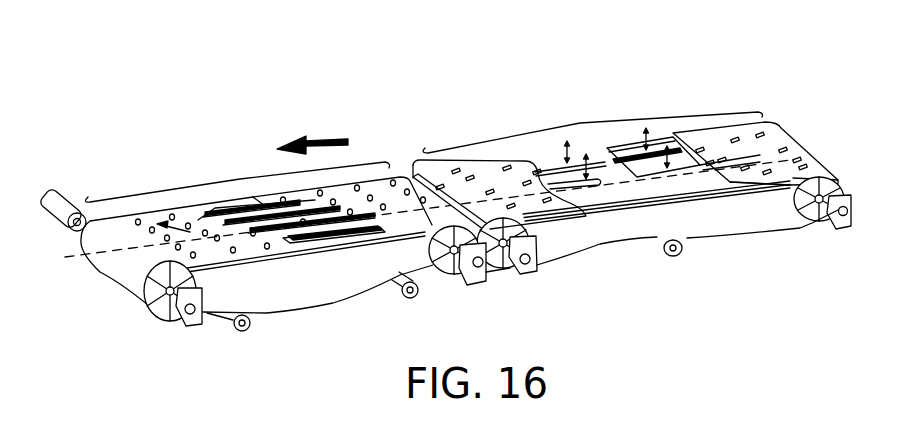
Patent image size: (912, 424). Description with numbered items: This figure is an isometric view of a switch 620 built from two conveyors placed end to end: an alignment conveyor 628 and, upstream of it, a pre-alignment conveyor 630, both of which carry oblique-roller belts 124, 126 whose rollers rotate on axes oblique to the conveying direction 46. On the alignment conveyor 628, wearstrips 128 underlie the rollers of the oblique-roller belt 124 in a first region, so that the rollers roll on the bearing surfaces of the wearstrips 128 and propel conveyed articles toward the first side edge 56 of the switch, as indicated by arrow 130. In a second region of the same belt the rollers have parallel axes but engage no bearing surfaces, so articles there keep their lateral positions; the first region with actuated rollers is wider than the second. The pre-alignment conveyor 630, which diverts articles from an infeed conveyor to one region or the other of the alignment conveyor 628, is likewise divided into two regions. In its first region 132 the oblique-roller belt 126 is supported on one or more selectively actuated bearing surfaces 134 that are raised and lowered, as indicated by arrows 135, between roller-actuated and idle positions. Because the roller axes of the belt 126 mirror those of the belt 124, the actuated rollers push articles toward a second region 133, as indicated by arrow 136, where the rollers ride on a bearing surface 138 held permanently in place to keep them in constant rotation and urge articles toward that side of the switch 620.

The switch 620 is at (336, 68).
The conveying direction 46 is at (322, 139).
The alignment conveyor 628 is at (238, 178).
The pre-alignment conveyor 630 is at (583, 122).
The first side edge 56 is at (151, 210).
The wearstrips 128 is at (228, 212).
The oblique-roller belt 124 is at (287, 242).
The arrow 130 is at (172, 262).
The arrow 136 is at (508, 192).
The arrows 135 is at (645, 140).
The selectively actuated bearing surfaces 134 is at (658, 143).
The first region 132 is at (778, 134).
The second region 133 is at (822, 170).
The oblique-roller belt 126 is at (747, 180).
The bearing surface 138 is at (680, 194).